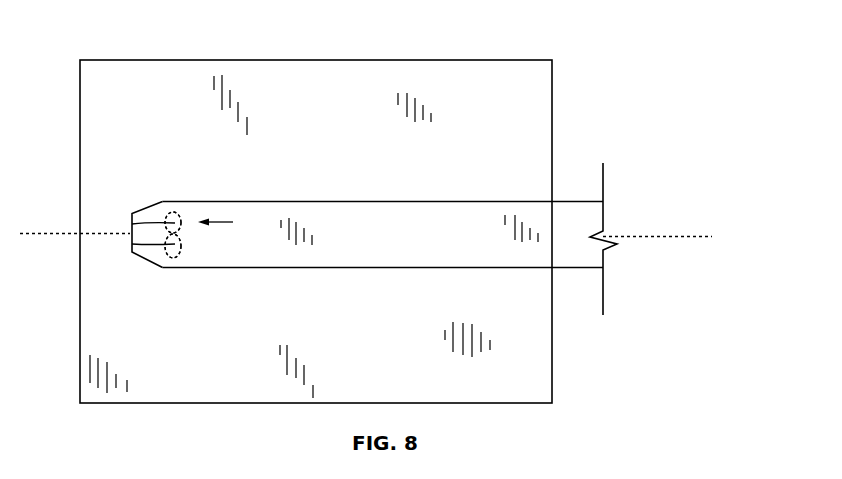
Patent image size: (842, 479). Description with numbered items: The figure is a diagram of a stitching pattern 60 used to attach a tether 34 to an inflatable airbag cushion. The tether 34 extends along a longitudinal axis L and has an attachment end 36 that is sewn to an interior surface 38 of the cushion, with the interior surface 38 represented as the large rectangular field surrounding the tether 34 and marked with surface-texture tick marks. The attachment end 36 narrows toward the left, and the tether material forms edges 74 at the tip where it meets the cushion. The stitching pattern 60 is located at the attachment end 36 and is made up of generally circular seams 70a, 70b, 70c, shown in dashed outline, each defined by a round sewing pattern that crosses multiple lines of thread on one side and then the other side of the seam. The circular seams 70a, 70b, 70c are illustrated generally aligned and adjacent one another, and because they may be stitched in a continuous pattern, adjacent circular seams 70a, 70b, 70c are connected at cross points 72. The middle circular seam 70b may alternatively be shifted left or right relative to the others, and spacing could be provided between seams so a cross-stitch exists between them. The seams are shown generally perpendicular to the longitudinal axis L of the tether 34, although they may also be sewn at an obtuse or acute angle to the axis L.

The tether 34 is at (363, 218).
The attachment end 36 is at (153, 283).
The interior surface 38 is at (533, 127).
The stitching pattern 60 is at (231, 222).
The circular seam 70a is at (182, 215).
The middle circular seam 70b is at (182, 240).
The circular seam 70c is at (182, 252).
The cross points 72 is at (170, 201).
The tip edges 74 is at (132, 225).
The longitudinal axis L is at (662, 236).